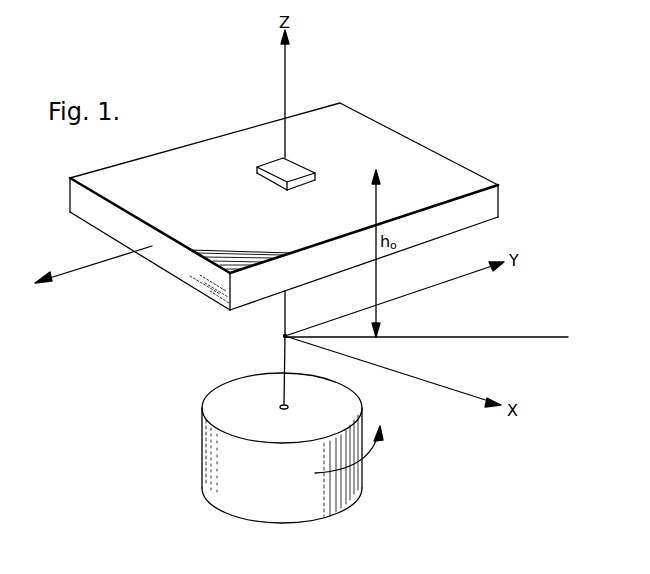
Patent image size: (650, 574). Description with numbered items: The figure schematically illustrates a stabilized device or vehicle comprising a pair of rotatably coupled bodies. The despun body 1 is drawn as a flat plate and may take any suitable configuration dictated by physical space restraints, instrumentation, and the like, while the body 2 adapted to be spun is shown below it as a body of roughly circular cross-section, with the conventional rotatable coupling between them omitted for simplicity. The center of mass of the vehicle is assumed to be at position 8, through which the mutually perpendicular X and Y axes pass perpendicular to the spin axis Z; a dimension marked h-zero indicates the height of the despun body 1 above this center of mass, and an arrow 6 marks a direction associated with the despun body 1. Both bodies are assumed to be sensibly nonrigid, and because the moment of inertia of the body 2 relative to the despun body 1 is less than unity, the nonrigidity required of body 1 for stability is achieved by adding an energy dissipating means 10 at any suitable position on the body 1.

The despun body 1 is at (165, 203).
The body adapted to be spun 2 is at (283, 511).
The direction of movement arrow 6 is at (176, 295).
The center of mass position 8 is at (285, 336).
The energy dissipating means 10 is at (303, 172).